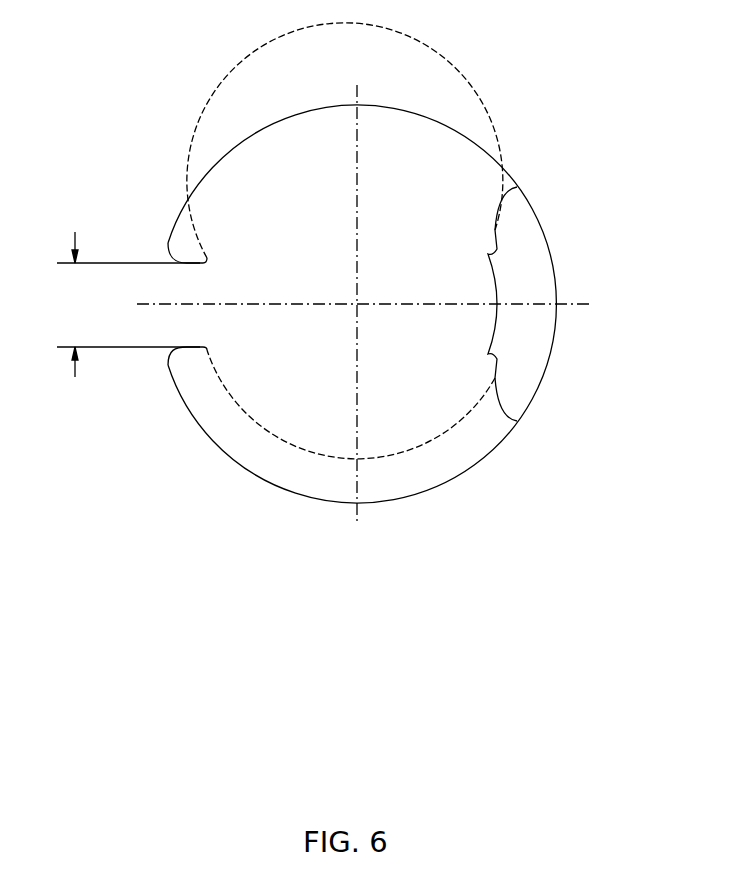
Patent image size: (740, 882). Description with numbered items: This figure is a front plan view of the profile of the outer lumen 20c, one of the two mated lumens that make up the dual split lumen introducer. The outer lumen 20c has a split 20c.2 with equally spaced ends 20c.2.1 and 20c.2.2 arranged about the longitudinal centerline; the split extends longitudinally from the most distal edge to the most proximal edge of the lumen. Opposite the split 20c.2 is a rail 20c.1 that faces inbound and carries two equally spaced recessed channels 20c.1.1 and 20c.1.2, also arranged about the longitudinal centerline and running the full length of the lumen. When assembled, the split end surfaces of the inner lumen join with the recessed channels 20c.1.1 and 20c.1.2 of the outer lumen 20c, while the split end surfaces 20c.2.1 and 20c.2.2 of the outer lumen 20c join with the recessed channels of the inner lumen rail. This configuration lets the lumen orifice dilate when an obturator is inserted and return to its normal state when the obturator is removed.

The outer lumen 20c is at (390, 108).
The rail 20c.1 is at (493, 277).
The recessed channel 20c.1.1 is at (510, 421).
The recessed channel 20c.1.2 is at (517, 187).
The split 20c.2 is at (123, 304).
The split end 20c.2.1 is at (200, 347).
The split end 20c.2.2 is at (200, 263).